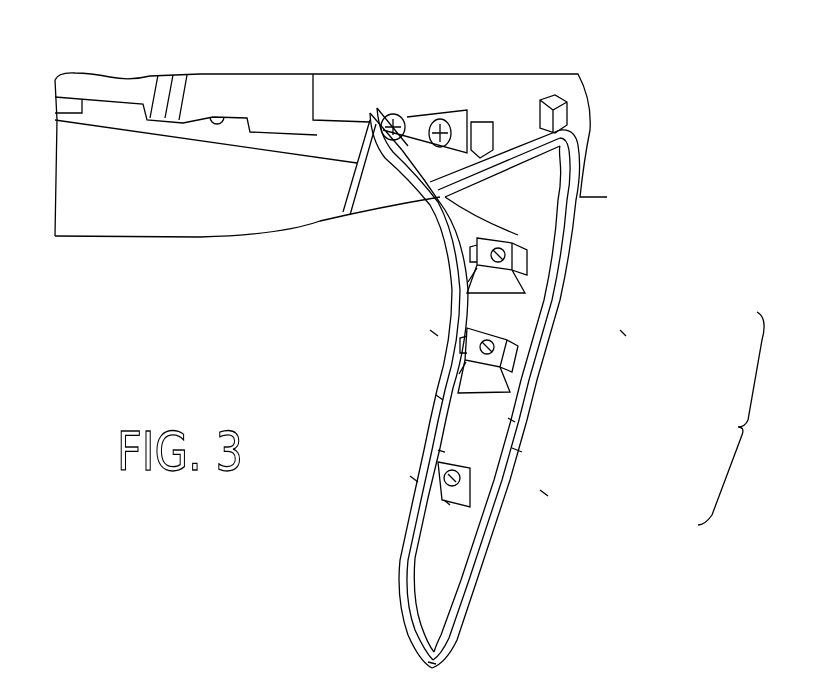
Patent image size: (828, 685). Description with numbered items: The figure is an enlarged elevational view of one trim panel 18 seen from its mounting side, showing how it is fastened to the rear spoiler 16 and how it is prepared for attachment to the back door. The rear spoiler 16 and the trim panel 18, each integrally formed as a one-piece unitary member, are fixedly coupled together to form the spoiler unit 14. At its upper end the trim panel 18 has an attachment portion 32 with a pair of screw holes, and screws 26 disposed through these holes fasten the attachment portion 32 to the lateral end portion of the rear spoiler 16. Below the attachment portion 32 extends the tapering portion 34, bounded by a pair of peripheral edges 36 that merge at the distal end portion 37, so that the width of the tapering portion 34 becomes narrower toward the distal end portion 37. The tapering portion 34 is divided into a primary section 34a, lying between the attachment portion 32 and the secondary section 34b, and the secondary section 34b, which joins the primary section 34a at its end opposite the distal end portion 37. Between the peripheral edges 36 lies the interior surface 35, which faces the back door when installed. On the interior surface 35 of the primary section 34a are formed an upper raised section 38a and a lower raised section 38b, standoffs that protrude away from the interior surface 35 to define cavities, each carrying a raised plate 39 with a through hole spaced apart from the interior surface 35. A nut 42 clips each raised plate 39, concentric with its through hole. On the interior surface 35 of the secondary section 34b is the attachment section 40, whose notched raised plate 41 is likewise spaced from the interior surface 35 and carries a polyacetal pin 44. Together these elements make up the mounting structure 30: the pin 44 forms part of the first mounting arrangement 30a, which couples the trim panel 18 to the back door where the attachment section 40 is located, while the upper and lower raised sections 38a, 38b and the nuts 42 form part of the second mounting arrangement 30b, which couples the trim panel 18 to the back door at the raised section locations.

The spoiler unit 14 is at (612, 88).
The rear spoiler 16 is at (203, 222).
The trim panel 18 is at (580, 195).
The screws 26 is at (438, 118).
The mounting structure 30 is at (737, 418).
The first mounting arrangement 30a is at (545, 492).
The second mounting arrangement 30b is at (628, 332).
The attachment portion 32 is at (470, 107).
The tapering portion 34 is at (532, 132).
The primary section 34a is at (421, 333).
The secondary section 34b is at (412, 479).
The interior surface 35 is at (510, 420).
The peripheral edges 36 is at (437, 398).
The distal end portion 37 is at (467, 638).
The upper raised section 38a is at (522, 272).
The lower raised section 38b is at (510, 358).
The raised plate 39 is at (456, 360).
The attachment section 40 is at (470, 495).
The raised plate 41 is at (437, 452).
The nuts 42 is at (514, 240).
The pin 44 is at (448, 504).